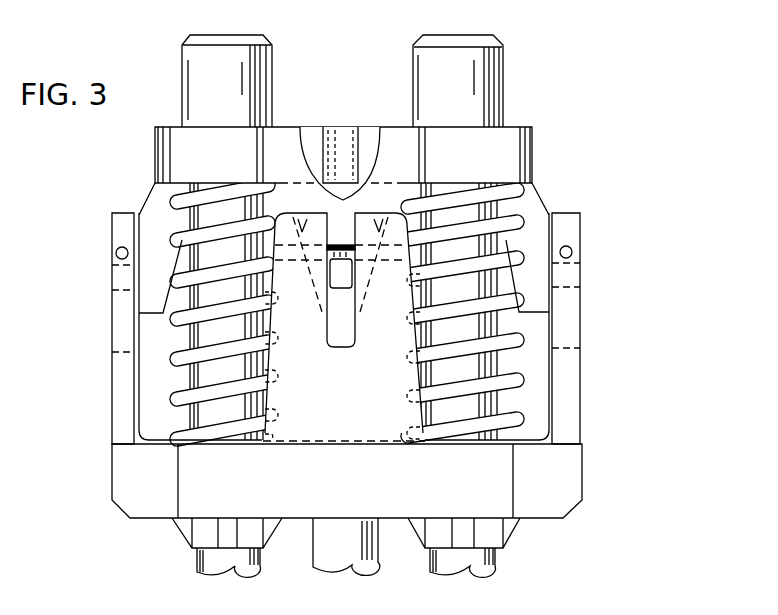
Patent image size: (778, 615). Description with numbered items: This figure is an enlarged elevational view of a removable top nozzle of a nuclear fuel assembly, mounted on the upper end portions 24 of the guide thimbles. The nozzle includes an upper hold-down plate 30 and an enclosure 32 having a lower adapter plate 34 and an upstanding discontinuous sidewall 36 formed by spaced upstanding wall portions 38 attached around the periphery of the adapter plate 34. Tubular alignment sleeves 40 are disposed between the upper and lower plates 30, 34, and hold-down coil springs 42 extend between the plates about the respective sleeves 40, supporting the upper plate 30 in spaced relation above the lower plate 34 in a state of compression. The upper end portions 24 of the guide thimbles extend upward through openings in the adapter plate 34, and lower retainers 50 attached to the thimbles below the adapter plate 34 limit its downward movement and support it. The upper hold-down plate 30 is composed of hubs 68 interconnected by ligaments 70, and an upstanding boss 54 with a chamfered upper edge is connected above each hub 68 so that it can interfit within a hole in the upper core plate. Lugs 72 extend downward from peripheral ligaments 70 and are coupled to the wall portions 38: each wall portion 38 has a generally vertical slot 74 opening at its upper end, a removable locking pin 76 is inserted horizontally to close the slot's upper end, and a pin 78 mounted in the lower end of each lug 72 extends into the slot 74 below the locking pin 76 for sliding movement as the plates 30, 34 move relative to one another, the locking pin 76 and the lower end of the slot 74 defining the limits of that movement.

The upper end portions of the guide thimbles 24 is at (197, 560).
The upper hold-down plate 30 is at (533, 128).
The enclosure 32 is at (583, 467).
The lower adapter plate 34 is at (125, 466).
The upstanding discontinuous sidewall 36 is at (582, 302).
The upstanding wall portions 38 is at (358, 430).
The tubular alignment sleeves 40 is at (183, 338).
The hold-down coil springs 42 is at (182, 398).
The lower retainers 50 is at (172, 522).
The upstanding bosses 54 is at (181, 82).
The hubs 68 is at (155, 147).
The ligaments 70 is at (278, 140).
The lugs 72 is at (350, 205).
The vertical slot 74 is at (335, 313).
The removable locking pin 76 is at (116, 252).
The pin 78 is at (348, 278).